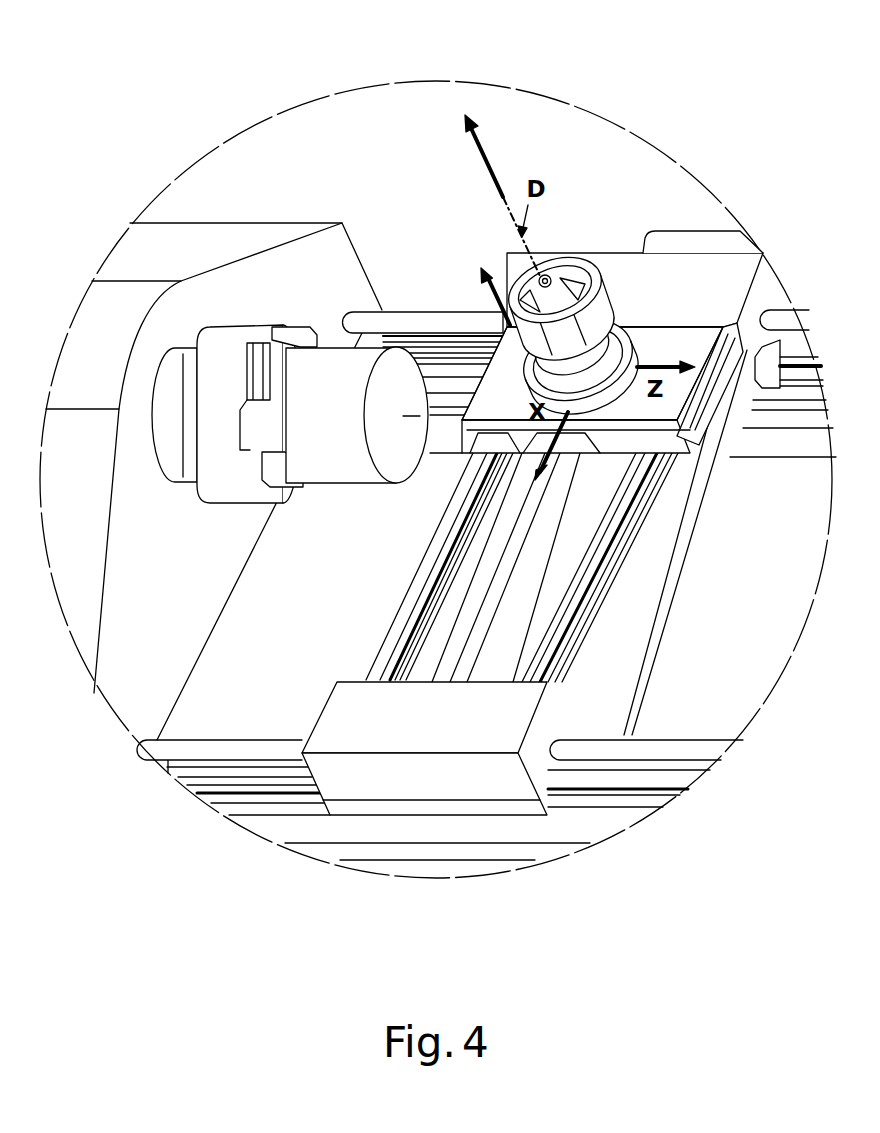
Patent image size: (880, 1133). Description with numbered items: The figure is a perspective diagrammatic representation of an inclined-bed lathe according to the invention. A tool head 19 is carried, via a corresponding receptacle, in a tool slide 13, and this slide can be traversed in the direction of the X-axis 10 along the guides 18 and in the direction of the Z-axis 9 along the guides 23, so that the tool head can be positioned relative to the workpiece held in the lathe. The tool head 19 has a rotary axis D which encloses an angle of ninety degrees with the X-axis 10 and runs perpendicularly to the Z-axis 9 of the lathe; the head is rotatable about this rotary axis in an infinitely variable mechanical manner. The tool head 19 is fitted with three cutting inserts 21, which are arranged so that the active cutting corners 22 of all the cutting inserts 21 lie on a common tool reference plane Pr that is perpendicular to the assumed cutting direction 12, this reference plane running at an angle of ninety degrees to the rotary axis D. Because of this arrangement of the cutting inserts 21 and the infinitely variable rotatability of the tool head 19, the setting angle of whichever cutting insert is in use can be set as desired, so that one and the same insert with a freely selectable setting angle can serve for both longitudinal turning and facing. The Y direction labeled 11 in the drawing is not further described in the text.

The Z-axis 9 is at (670, 363).
The X-axis 10 is at (551, 430).
The Y-axis direction 11 is at (487, 150).
The assumed cutting direction 12 is at (479, 268).
The tool slide 13 is at (692, 343).
The guides 18 is at (562, 622).
The tool head 19 is at (567, 337).
The cutting inserts 21 is at (577, 258).
The active cutting corners 22 is at (570, 288).
The guides 23 is at (798, 349).